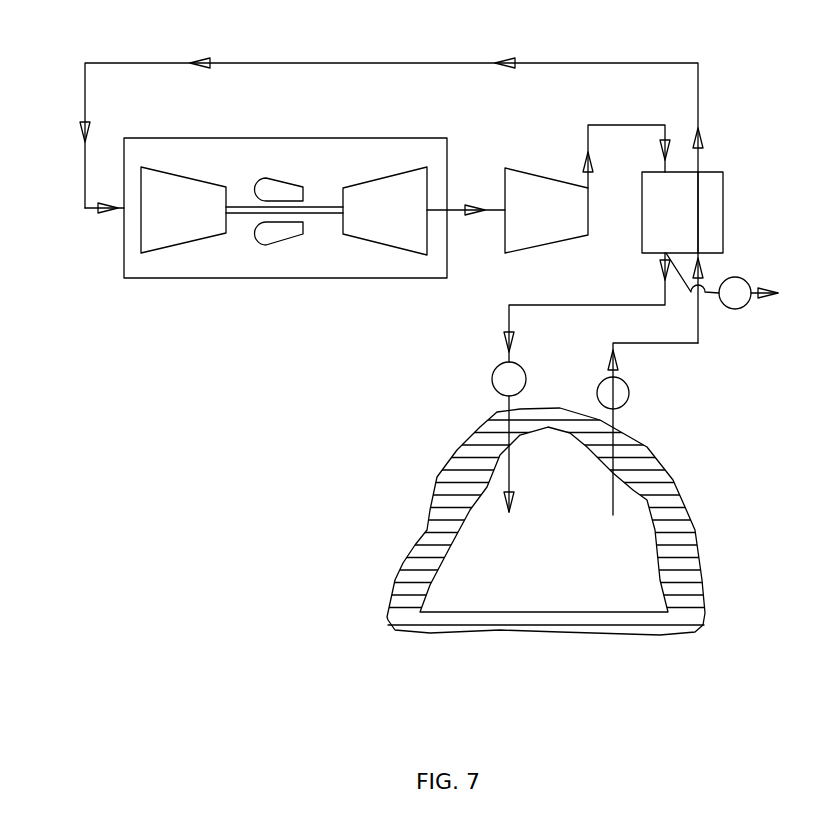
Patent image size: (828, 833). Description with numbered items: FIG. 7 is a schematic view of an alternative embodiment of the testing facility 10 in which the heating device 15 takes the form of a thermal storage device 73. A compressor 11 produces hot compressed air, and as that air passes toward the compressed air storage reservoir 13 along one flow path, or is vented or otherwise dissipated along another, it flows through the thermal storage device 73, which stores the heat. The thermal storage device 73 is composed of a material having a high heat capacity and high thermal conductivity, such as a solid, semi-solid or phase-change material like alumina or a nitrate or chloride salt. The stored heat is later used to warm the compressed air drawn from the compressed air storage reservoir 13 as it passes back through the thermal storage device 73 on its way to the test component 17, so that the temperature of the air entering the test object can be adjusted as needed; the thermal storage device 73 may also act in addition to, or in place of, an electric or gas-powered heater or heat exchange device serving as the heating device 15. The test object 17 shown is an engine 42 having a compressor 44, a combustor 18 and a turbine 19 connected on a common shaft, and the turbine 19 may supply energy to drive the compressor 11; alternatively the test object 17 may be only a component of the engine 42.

The testing facility 10 is at (60, 40).
The compressor 11 is at (533, 195).
The compressed air storage reservoir 13 is at (477, 560).
The heating device 15 is at (723, 193).
The test component 17 is at (213, 278).
The combustor 18 is at (280, 235).
The turbine 19 is at (385, 198).
The engine 42 is at (279, 268).
The compressor 44 is at (158, 190).
The thermal storage device 73 is at (713, 213).